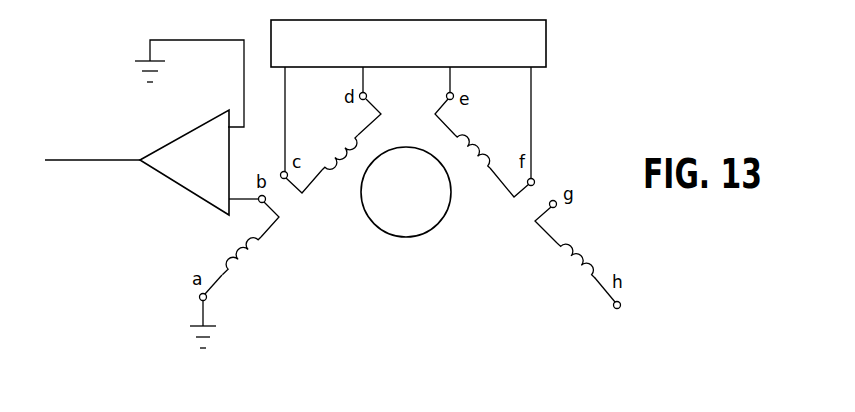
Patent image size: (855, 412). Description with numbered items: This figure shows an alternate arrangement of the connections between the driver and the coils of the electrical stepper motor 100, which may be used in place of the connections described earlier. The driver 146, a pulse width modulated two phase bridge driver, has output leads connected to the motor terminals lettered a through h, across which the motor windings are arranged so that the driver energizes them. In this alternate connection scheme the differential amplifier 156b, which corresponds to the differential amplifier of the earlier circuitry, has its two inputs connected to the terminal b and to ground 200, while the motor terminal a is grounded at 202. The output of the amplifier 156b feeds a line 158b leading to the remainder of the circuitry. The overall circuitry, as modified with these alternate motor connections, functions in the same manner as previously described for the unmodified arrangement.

The ground 200 is at (158, 83).
The input line to F1 158b is at (92, 176).
The differential amplifier 156b is at (199, 181).
The driver 146 is at (442, 43).
The ground 202 is at (239, 326).
The electrical stepper motor 100 is at (425, 209).